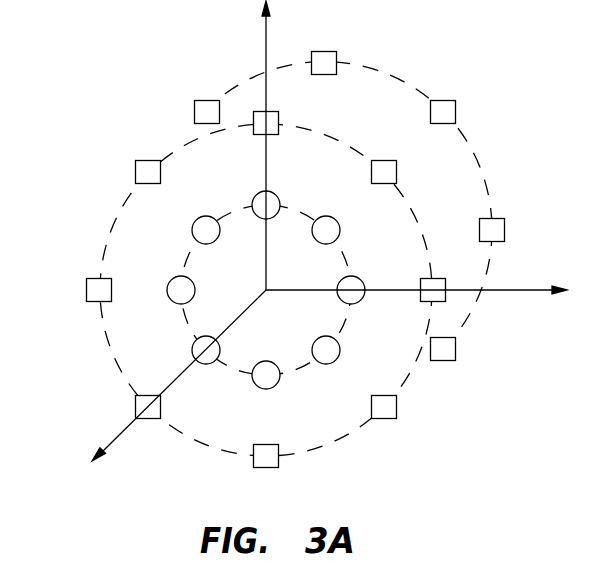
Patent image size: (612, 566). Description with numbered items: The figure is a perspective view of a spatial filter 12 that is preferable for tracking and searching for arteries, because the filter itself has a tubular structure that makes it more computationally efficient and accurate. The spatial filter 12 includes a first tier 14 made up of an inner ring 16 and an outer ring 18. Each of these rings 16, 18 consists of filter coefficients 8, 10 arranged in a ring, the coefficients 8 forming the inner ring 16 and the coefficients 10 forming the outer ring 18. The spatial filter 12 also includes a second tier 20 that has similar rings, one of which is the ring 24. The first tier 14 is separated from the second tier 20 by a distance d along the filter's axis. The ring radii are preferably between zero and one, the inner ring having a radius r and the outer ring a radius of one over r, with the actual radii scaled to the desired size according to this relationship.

The filter coefficients 8 is at (338, 350).
The filter coefficients 10 is at (505, 229).
The spatial filter 12 is at (100, 31).
The first tier 14 is at (172, 124).
The inner ring 16 is at (248, 370).
The outer ring 18 is at (105, 340).
The second tier 20 is at (240, 60).
The ring 24 is at (477, 164).